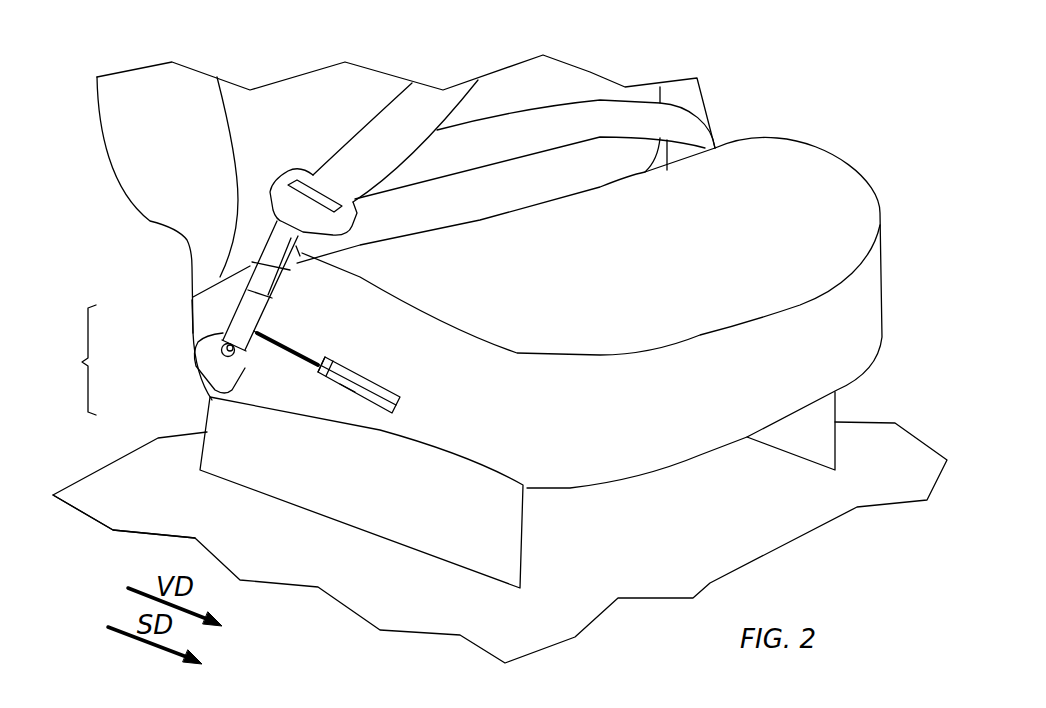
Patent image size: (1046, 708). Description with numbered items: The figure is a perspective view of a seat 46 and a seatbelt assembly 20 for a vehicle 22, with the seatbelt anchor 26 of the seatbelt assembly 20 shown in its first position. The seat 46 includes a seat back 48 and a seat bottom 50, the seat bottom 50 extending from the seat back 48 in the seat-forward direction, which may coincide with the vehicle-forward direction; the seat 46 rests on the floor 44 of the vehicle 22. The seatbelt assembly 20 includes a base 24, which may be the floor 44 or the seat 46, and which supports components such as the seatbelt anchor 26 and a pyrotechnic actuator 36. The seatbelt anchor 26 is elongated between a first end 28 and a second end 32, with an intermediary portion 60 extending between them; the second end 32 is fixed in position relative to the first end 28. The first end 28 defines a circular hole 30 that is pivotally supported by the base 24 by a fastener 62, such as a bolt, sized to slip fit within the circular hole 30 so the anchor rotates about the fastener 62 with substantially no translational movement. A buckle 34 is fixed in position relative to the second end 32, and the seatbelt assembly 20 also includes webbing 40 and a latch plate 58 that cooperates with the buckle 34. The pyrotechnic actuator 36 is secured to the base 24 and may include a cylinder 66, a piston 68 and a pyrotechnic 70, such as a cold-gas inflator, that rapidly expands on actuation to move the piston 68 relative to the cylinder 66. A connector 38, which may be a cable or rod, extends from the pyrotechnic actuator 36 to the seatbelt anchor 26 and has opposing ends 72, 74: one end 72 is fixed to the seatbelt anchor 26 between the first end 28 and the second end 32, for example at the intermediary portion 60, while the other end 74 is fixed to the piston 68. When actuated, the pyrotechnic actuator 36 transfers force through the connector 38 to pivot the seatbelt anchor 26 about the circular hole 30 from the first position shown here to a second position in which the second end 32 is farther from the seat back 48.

The seatbelt assembly 20 is at (198, 172).
The vehicle 22 is at (873, 443).
The base 24 is at (70, 360).
The seatbelt anchor 26 is at (270, 312).
The first end 28 is at (242, 380).
The circular hole 30 is at (229, 342).
The second end 32 is at (244, 293).
The buckle 34 is at (303, 253).
The pyrotechnic actuator 36 is at (370, 420).
The connector 38 is at (293, 350).
The webbing 40 is at (437, 160).
The floor 44 is at (152, 472).
The seat 46 is at (210, 317).
The seat back 48 is at (290, 108).
The seat bottom 50 is at (818, 163).
The latch plate 58 is at (287, 180).
The intermediary portion 60 is at (247, 317).
The fastener 62 is at (222, 352).
The cylinder 66 is at (344, 390).
The piston 68 is at (383, 383).
The pyrotechnic 70 is at (335, 357).
The end 72 is at (263, 347).
The end 74 is at (313, 372).